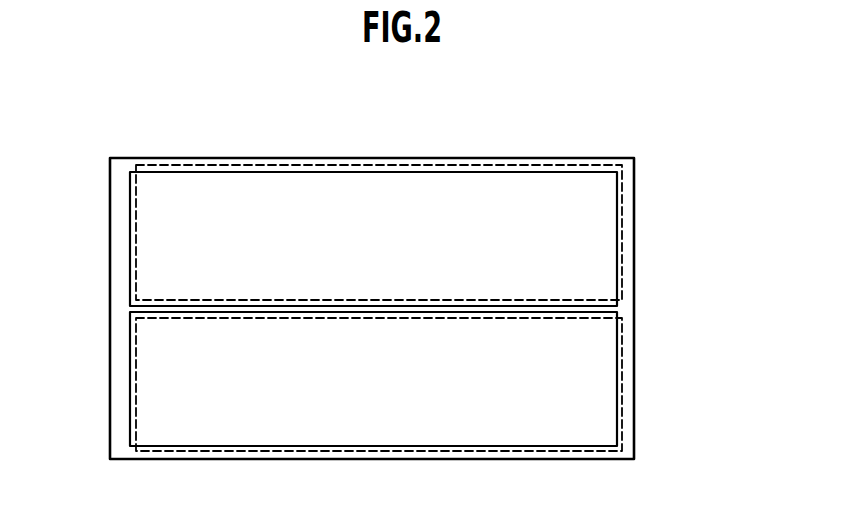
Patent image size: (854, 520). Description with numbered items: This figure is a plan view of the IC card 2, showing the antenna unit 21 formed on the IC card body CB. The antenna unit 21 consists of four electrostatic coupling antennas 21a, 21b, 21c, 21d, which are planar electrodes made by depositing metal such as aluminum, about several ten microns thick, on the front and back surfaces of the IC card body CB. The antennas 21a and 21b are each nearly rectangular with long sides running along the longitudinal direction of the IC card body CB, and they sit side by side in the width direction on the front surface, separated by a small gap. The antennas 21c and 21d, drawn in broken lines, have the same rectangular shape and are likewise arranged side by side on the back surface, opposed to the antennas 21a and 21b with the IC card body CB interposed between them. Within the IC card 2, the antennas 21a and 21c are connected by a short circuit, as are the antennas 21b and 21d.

The IC card 2 is at (395, 119).
The IC card body CB is at (573, 158).
The antenna unit 21 is at (742, 190).
The electrostatic coupling antenna 21a is at (617, 240).
The electrostatic coupling antenna 21b is at (617, 378).
The electrostatic coupling antenna 21c is at (622, 190).
The electrostatic coupling antenna 21d is at (622, 332).